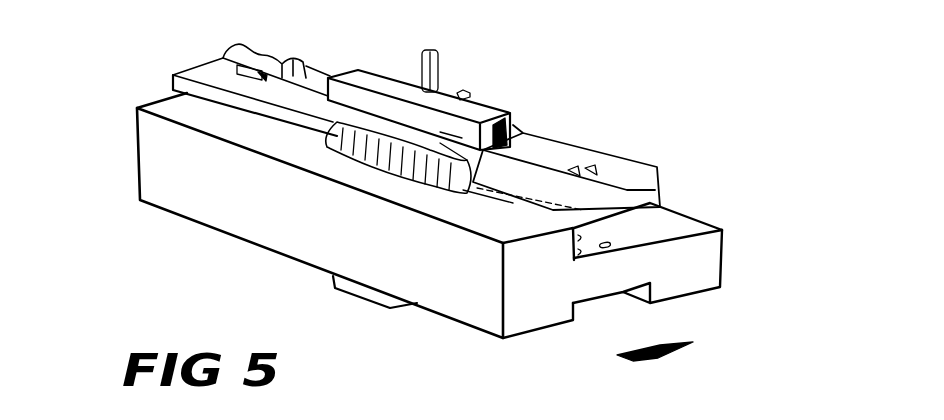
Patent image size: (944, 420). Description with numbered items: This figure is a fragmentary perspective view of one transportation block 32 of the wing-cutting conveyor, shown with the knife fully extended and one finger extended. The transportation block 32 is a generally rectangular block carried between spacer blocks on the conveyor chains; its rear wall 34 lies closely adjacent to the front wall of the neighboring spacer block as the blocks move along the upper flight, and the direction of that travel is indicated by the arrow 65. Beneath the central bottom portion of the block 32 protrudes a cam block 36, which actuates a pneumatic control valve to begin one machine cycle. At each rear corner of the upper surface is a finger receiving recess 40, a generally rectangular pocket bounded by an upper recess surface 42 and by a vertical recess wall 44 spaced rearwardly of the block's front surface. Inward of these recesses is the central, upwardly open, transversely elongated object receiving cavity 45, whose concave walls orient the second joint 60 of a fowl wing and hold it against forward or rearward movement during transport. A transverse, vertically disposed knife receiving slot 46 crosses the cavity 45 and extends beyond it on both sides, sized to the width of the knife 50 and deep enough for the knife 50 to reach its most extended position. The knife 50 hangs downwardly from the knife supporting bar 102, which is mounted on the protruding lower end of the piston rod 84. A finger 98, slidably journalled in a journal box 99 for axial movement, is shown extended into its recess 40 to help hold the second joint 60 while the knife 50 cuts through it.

The transportation block 32 is at (135, 104).
The rear wall 34 is at (240, 218).
The cam block 36 is at (337, 288).
The finger receiving recess 40 is at (302, 102).
The upper recess surface 42 is at (705, 233).
The recess wall 44 is at (240, 110).
The object receiving cavity 45 is at (463, 191).
The knife receiving slot 46 is at (507, 172).
The knife 50 is at (463, 137).
The second joint 60 is at (327, 145).
The arrow 65 is at (652, 360).
The piston rod 84 is at (440, 60).
The finger 98 is at (173, 78).
The journal box 99 is at (223, 58).
The knife supporting bar 102 is at (457, 93).